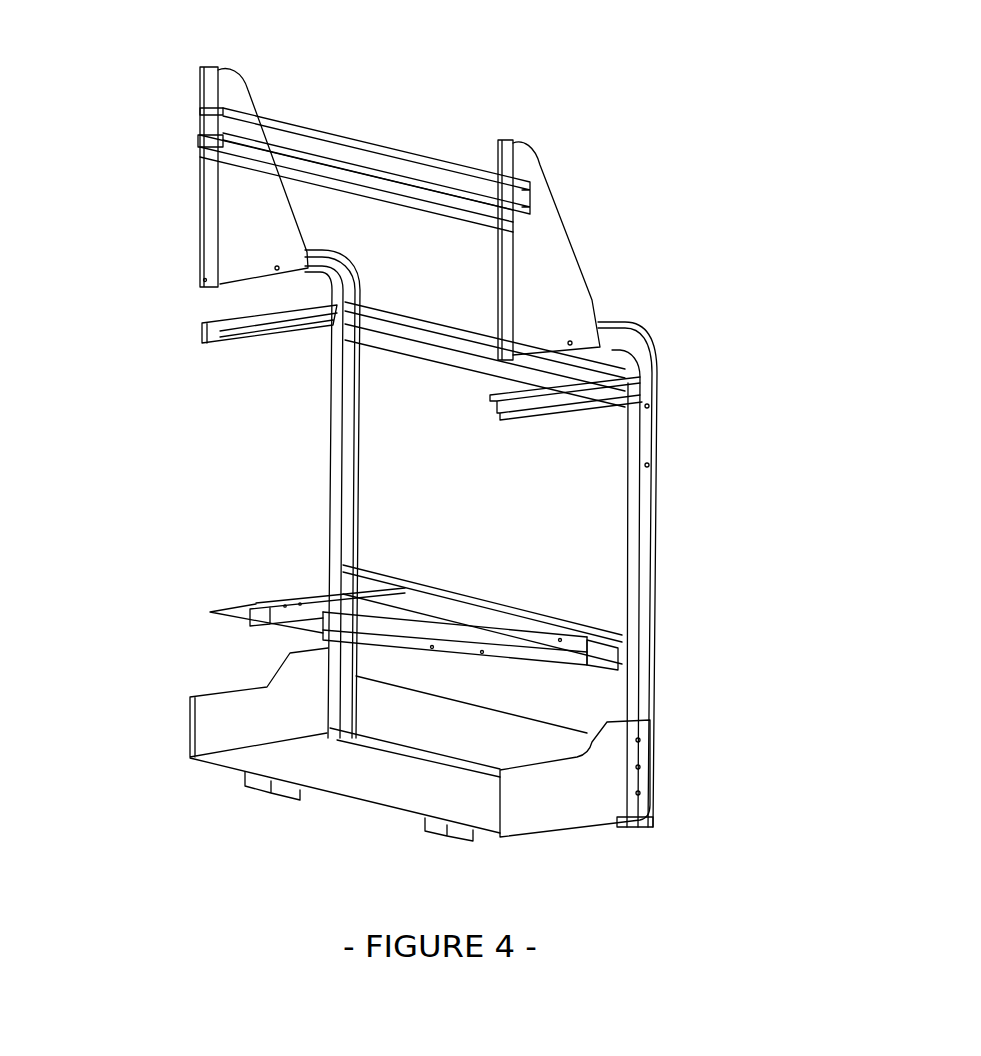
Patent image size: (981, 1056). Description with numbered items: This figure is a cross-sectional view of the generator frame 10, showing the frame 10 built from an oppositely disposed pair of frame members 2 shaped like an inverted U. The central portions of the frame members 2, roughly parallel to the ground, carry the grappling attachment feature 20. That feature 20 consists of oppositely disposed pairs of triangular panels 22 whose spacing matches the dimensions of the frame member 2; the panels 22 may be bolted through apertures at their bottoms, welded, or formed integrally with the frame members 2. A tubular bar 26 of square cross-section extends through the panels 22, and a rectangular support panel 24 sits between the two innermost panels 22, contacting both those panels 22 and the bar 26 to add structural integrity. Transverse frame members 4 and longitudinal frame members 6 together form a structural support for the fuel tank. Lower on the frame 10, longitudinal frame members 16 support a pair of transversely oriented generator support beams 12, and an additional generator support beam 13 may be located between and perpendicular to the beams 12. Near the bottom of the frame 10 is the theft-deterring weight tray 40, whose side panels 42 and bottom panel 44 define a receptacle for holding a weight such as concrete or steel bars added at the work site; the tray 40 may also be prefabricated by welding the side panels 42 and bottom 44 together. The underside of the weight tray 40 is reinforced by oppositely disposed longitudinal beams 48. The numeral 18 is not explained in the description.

The frame 10 is at (707, 104).
The frame member 2 is at (330, 462).
The transverse frame member 4 is at (200, 330).
The longitudinal frame member 6 is at (440, 338).
The generator support beam 12 is at (257, 604).
The generator support beam 13 is at (425, 630).
The longitudinal frame member 16 is at (420, 600).
The front rail 18 is at (318, 632).
The grappling attachment feature 20 is at (184, 107).
The triangular panel 22 is at (255, 240).
The rectangular support panel 24 is at (398, 197).
The tubular bar 26 is at (320, 132).
The weight tray 40 is at (204, 733).
The side panel 42 is at (570, 808).
The bottom panel 44 is at (438, 797).
The longitudinal beam 48 is at (473, 829).